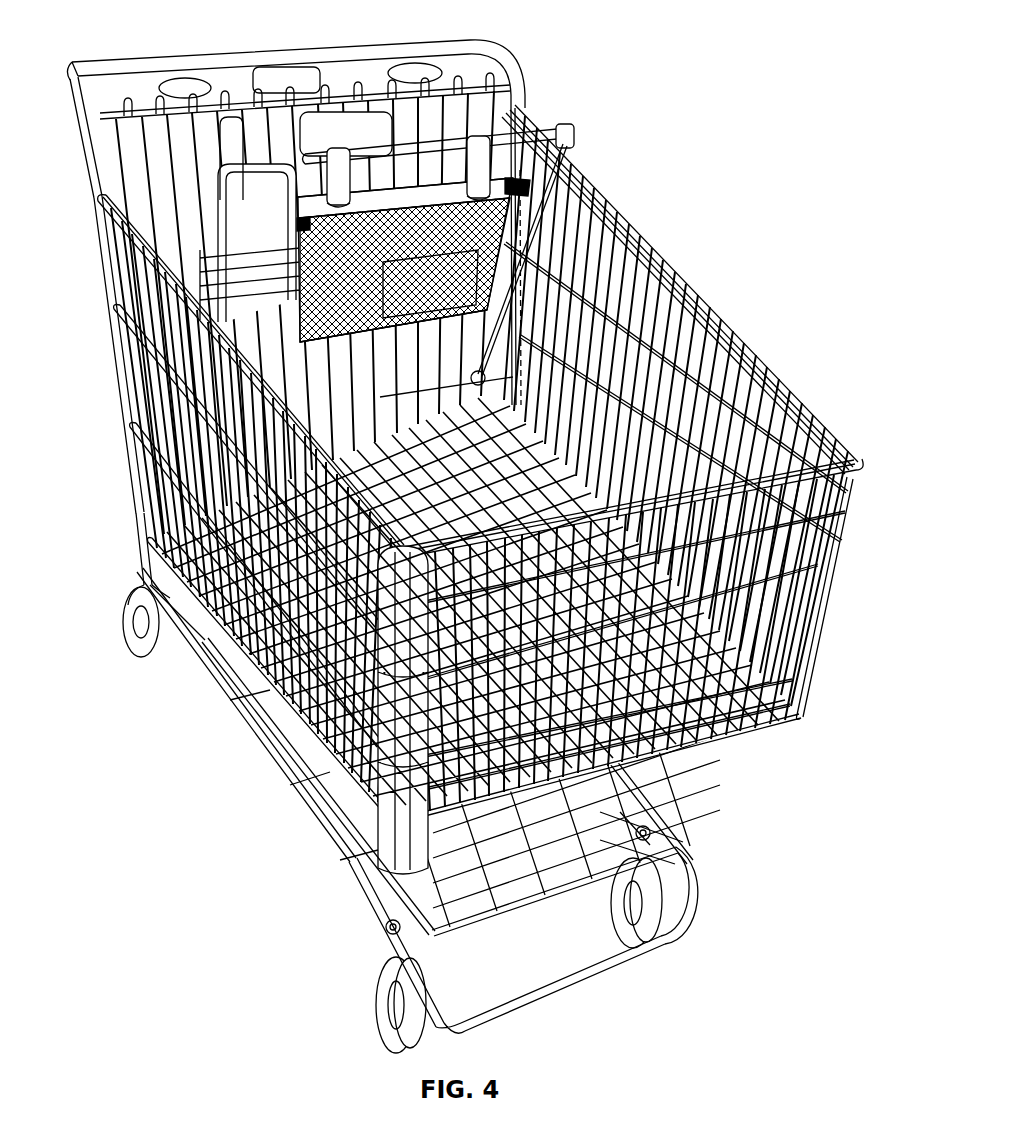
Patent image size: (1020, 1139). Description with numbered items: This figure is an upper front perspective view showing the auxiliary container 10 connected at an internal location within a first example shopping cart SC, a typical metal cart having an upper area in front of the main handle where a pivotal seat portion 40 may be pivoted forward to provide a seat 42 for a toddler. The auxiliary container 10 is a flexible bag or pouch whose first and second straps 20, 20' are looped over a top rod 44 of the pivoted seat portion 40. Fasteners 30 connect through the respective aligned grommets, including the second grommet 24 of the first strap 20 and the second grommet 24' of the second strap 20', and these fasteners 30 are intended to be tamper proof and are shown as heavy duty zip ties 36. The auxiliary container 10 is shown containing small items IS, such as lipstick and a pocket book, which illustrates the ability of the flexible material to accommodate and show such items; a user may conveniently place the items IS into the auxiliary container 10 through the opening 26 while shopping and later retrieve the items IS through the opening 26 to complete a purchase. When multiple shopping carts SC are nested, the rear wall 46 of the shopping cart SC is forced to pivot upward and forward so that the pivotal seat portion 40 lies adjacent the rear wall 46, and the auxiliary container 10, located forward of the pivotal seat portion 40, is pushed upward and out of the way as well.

The auxiliary container 10 is at (505, 232).
The first strap 20 is at (501, 82).
The second strap 20' is at (338, 89).
The second grommet 24 is at (509, 116).
The second grommet 24' is at (246, 110).
The opening 26 is at (402, 172).
The fasteners 30 is at (355, 148).
The heavy duty zip ties 36 is at (300, 223).
The pivotal seat portion 40 is at (567, 147).
The seat 42 is at (410, 335).
The top rod 44 is at (563, 123).
The rear wall 46 is at (447, 420).
The shopping cart SC is at (667, 253).
The items IS is at (210, 608).